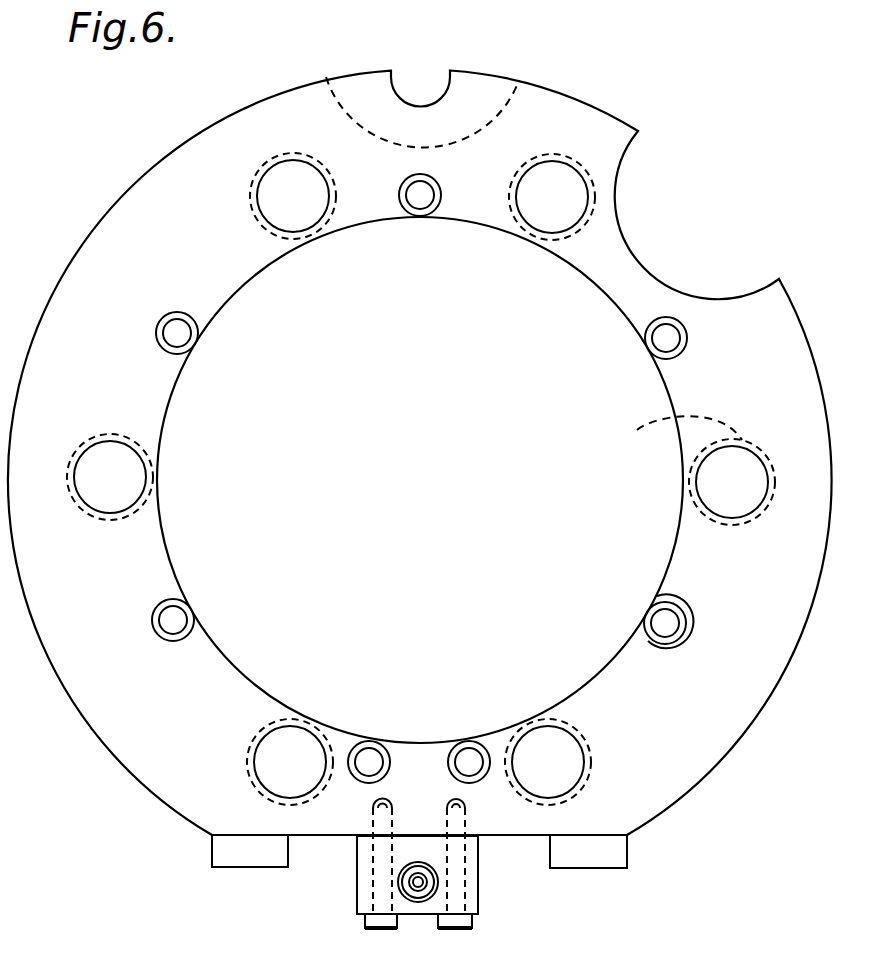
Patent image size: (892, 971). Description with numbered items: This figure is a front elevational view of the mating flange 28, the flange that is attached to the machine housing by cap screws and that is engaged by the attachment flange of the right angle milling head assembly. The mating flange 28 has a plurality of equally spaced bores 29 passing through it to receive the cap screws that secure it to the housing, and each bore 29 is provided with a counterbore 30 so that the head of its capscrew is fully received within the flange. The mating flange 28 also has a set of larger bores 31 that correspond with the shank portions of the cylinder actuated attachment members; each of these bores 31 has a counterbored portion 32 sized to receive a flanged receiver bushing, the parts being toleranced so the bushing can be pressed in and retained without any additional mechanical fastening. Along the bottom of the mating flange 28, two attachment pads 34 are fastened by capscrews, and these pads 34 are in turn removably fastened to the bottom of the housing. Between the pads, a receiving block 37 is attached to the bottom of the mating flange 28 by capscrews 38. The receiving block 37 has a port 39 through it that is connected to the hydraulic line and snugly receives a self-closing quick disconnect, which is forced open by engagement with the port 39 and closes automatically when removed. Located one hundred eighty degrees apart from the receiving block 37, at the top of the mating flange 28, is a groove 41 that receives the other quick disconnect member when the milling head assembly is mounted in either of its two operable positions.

The mating flange 28 is at (690, 733).
The bores 29 is at (657, 596).
The counterbore 30 is at (652, 624).
The bores 31 is at (725, 481).
The counterbored portion 32 is at (668, 432).
The attachment pads 34 is at (237, 855).
The receiving block 37 is at (432, 850).
The capscrews 38 is at (465, 935).
The port 39 is at (403, 880).
The groove 41 is at (422, 84).